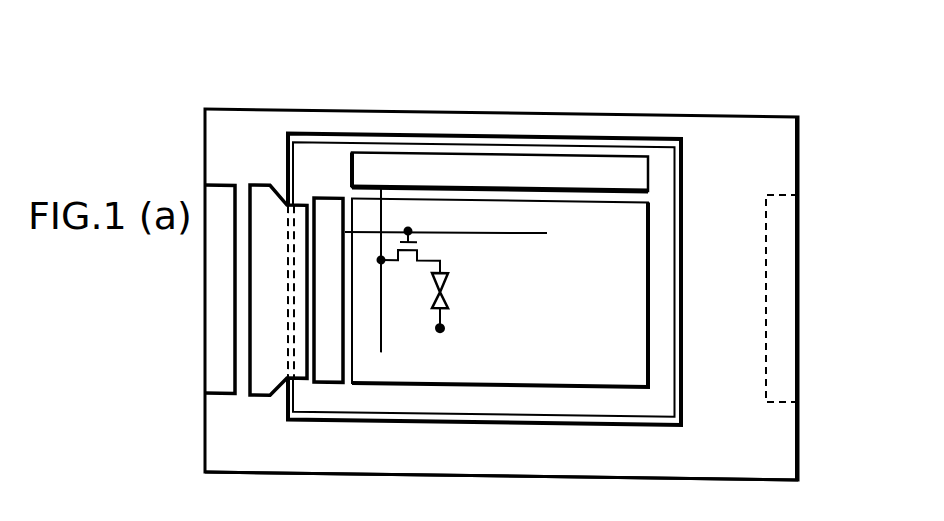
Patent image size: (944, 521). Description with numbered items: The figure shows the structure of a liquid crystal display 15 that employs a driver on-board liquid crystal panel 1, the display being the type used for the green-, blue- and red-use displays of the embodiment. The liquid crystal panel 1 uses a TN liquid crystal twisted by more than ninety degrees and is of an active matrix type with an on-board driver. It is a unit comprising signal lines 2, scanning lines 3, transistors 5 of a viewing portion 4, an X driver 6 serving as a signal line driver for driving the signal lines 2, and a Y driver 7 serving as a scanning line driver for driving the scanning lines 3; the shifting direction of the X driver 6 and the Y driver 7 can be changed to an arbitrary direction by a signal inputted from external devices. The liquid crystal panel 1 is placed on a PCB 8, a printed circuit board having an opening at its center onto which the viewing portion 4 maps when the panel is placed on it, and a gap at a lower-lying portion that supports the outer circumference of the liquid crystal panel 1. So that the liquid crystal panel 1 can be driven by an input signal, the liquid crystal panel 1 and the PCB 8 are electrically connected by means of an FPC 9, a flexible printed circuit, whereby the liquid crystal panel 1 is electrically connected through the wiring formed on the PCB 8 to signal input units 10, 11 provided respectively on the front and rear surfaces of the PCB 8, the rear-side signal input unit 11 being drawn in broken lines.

The liquid crystal panel 1 is at (667, 339).
The signal lines 2 is at (383, 345).
The scanning lines 3 is at (535, 235).
The viewing portion 4 is at (650, 388).
The transistors 5 is at (423, 253).
The X driver 6 is at (585, 168).
The Y driver 7 is at (327, 370).
The PCB 8 is at (768, 482).
The FPC 9 is at (262, 200).
The signal input unit 10 is at (220, 309).
The signal input unit 11 is at (783, 304).
The liquid crystal display 15 is at (740, 101).